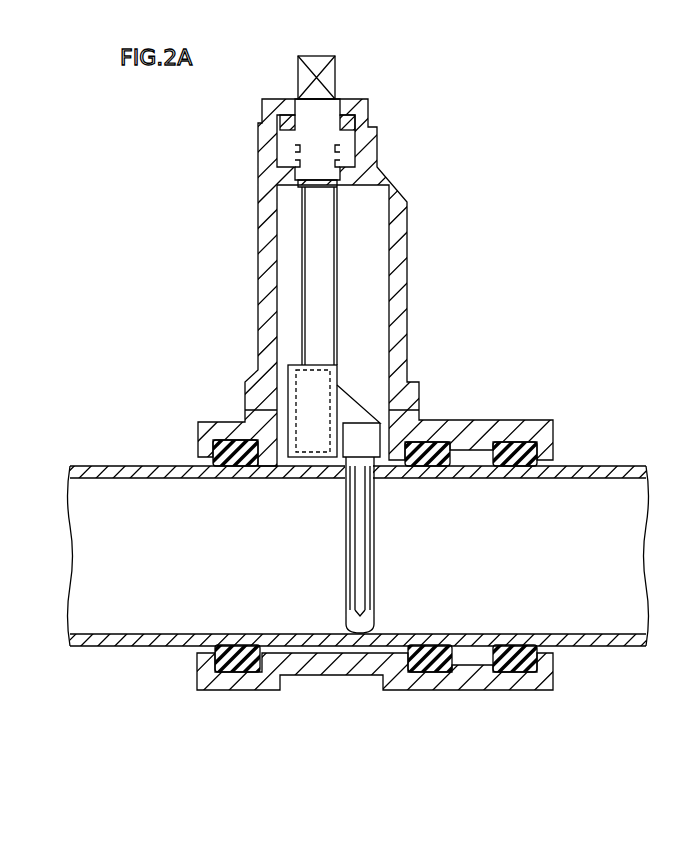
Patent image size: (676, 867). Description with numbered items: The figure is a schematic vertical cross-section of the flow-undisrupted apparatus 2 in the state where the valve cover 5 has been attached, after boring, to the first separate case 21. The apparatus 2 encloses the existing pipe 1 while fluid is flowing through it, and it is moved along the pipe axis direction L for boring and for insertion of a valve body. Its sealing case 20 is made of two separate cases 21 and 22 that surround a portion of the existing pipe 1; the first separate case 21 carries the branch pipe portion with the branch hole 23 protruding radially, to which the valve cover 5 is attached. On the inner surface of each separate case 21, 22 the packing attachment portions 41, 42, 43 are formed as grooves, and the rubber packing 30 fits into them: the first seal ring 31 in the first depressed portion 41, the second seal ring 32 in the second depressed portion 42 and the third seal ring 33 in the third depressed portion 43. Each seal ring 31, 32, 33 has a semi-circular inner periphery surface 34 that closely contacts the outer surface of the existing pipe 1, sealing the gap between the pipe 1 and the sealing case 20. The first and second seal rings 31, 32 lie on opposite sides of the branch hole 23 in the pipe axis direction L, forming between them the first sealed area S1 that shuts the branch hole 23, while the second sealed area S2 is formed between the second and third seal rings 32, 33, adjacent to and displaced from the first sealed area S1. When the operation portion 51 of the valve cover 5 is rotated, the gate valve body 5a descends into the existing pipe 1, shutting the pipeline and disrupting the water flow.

The existing pipe 1 is at (100, 466).
The apparatus 2 is at (178, 190).
The valve cover 5 is at (262, 190).
The valve body 5a is at (374, 537).
The sealing case 20 is at (198, 420).
The first separate case 21 is at (196, 445).
The second separate case 22 is at (197, 668).
The branch hole 23 is at (389, 395).
The rubber packing 30 is at (216, 468).
The first seal ring 31 is at (252, 468).
The second seal ring 32 is at (430, 468).
The third seal ring 33 is at (527, 470).
The inner periphery surface 34 is at (238, 468).
The first depressed portion 41 is at (226, 422).
The second depressed portion 42 is at (430, 442).
The third depressed portion 43 is at (515, 442).
The operation portion 51 is at (336, 76).
The first sealed area S1 is at (290, 470).
The second sealed area S2 is at (470, 470).
The pipe axis direction L is at (196, 563).